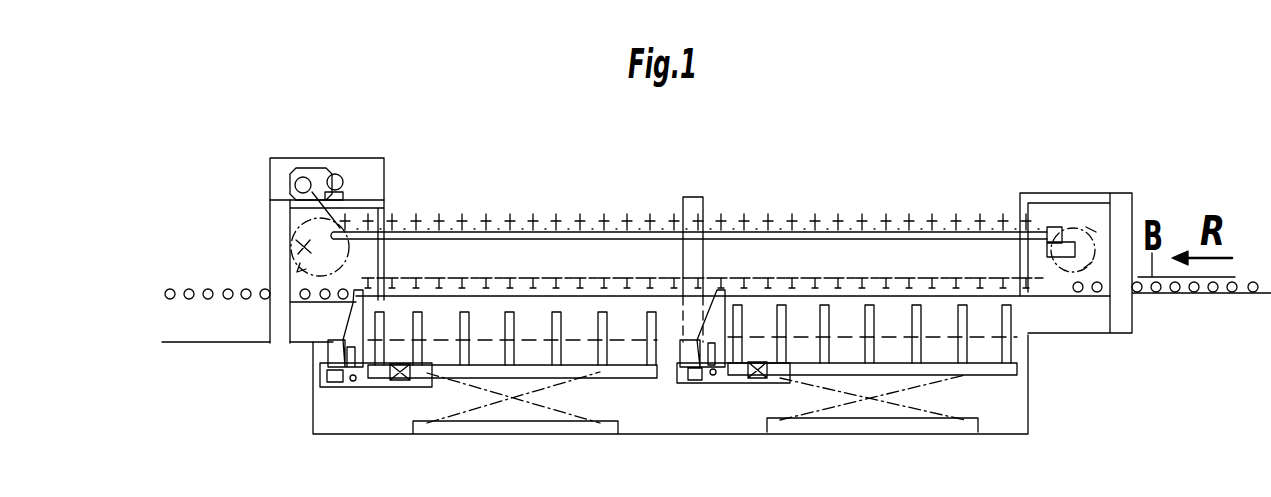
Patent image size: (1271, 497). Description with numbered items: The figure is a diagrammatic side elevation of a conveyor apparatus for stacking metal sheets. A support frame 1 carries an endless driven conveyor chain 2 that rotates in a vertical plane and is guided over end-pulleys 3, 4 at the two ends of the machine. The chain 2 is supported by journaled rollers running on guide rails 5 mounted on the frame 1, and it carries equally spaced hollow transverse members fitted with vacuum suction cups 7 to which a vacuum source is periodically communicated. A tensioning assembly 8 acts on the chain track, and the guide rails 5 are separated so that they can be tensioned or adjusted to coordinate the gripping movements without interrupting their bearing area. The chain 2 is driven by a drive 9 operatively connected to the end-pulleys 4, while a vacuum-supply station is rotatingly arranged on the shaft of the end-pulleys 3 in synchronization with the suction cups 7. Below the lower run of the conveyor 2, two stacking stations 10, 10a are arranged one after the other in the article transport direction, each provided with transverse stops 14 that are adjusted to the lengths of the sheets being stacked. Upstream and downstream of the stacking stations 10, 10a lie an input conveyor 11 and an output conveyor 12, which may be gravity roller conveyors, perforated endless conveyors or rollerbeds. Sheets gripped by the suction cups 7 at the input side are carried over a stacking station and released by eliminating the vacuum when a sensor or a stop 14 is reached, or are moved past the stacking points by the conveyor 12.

The support frame 1 is at (277, 260).
The conveyor chain 2 is at (522, 278).
The end-pulley 3 is at (1078, 240).
The end-pulley 4 is at (313, 255).
The guide rails 5 is at (796, 240).
The vacuum suction cups 7 is at (898, 213).
The tensioning assembly 8 is at (1062, 240).
The drive 9 is at (313, 178).
The stacking station 10 is at (985, 363).
The stacking station 10a is at (632, 372).
The input conveyor means 11 is at (1192, 298).
The output conveyor means 12 is at (228, 300).
The transverse stops 14 is at (353, 322).